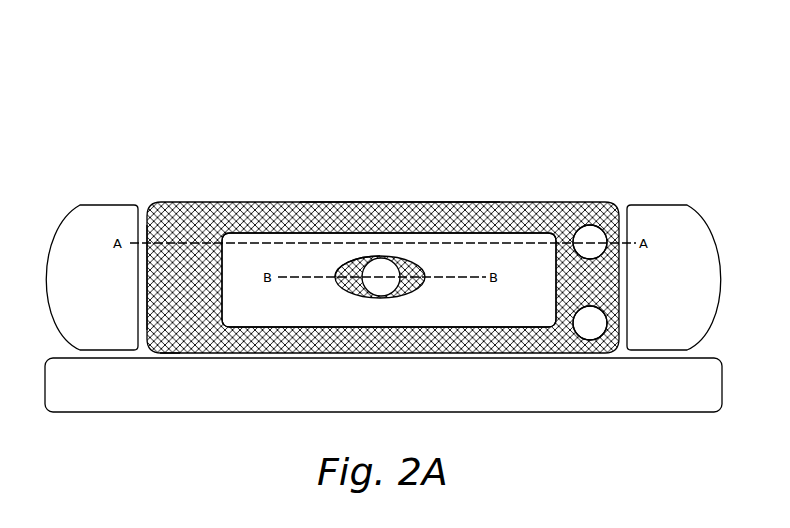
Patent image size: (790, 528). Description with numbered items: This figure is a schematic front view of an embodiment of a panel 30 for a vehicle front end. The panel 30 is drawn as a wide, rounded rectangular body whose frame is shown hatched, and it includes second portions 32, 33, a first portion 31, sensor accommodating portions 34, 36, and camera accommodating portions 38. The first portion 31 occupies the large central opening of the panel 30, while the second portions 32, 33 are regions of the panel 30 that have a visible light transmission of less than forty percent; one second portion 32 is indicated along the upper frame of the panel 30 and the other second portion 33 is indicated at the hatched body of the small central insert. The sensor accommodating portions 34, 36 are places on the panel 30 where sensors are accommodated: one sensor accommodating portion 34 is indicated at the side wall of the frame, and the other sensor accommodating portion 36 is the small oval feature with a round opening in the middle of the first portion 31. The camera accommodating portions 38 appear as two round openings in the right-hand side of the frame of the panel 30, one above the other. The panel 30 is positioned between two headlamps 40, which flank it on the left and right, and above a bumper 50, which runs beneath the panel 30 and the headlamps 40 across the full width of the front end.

The panel 30 is at (250, 184).
The first portion 31 is at (268, 305).
The second portion 32 is at (491, 202).
The second portion 33 is at (350, 292).
The sensor accommodating portion 34 is at (158, 203).
The sensor accommodating portion 36 is at (378, 268).
The camera accommodating portion 38 is at (590, 233).
The headlamp 40 is at (92, 223).
The bumper 50 is at (447, 395).